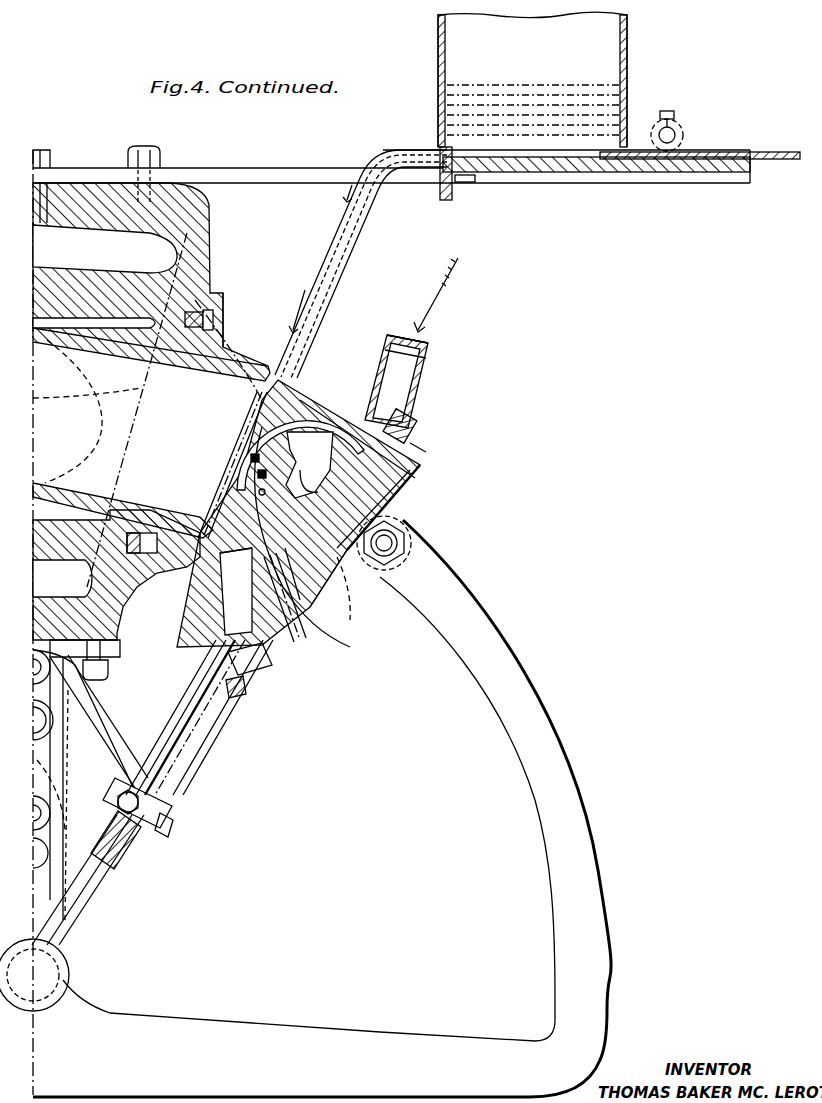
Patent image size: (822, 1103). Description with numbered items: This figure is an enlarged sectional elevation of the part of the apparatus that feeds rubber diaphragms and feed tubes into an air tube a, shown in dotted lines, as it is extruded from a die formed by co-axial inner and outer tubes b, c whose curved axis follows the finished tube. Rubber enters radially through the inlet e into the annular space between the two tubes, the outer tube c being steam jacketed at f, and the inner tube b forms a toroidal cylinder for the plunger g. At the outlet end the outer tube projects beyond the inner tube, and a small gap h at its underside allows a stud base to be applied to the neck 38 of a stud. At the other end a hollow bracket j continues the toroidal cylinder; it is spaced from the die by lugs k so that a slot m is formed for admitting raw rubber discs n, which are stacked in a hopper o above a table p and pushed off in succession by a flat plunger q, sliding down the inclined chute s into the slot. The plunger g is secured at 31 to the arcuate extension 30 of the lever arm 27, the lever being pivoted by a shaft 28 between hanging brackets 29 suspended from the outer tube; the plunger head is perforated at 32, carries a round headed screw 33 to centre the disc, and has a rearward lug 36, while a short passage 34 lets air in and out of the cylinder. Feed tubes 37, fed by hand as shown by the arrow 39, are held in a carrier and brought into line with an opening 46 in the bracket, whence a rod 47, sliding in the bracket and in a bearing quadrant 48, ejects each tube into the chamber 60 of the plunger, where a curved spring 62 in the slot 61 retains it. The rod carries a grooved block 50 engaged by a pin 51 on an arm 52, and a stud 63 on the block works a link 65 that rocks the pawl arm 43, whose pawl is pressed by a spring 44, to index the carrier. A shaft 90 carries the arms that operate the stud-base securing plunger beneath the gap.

The vertical guide or hopper o is at (628, 44).
The disc of raw rubber n is at (565, 85).
The table p is at (618, 172).
The flat plunger q is at (763, 152).
The downwardly inclined chute s is at (340, 253).
The arrow 39 is at (444, 282).
The steam jacket f is at (151, 282).
The slot m is at (223, 300).
The air tube a is at (235, 343).
The inner tube of the die b is at (93, 332).
The outer tube of the die c is at (116, 548).
The inlet e is at (110, 410).
The plunger g is at (240, 448).
The gap h is at (252, 441).
The lug k is at (292, 574).
The hollow bracket j is at (312, 425).
The securing point 31 is at (403, 527).
The perforations 32 is at (330, 396).
The round headed screw 33 is at (250, 462).
The short passage 34 is at (384, 543).
The rearwardly projecting lug 36 is at (323, 560).
The feed tube 37 is at (425, 362).
The neck of the stud 38 is at (435, 340).
The arm 43 is at (253, 670).
The spring 44 is at (417, 385).
The opening 46 is at (263, 587).
The rod 47 is at (212, 697).
The chamber 60 is at (420, 430).
The forwardly opening slot 61 is at (258, 492).
The curved spring 62 is at (417, 450).
The link 65 is at (212, 744).
The shaft 90 is at (37, 712).
The arm 52 is at (90, 740).
The pin 51 is at (142, 797).
The transversely grooved block 50 is at (143, 802).
The stud 63 is at (170, 826).
The bearing quadrant 48 is at (100, 833).
The hanging bracket 29 is at (53, 877).
The shaft 28 is at (40, 963).
The arm of the lever 27 is at (247, 1027).
The arcuate extension 30 is at (540, 798).